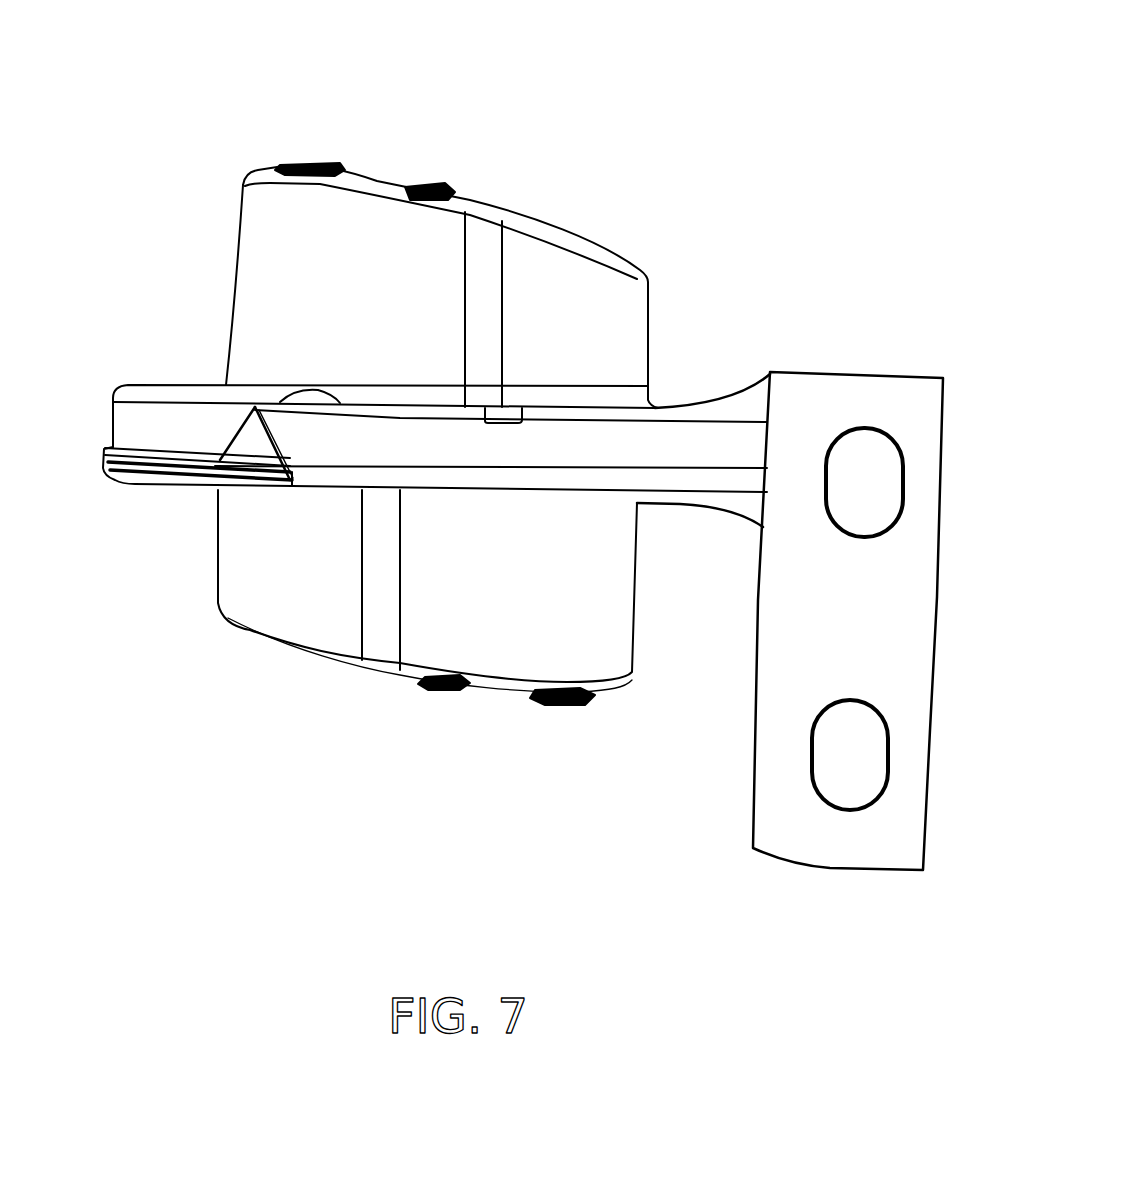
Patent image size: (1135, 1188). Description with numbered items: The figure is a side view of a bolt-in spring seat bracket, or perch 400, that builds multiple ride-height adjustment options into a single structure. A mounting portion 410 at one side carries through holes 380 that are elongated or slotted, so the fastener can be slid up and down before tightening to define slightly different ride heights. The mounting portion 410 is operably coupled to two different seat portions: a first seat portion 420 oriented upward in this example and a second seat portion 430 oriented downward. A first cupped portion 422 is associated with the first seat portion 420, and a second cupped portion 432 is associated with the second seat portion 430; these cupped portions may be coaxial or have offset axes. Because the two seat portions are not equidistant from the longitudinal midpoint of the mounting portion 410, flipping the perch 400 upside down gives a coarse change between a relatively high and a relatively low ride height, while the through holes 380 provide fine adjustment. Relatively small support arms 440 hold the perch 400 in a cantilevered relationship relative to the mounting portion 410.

The perch 400 is at (767, 180).
The mounting portion 410 is at (832, 660).
The through holes 380 is at (865, 472).
The first seat portion 420 is at (185, 388).
The first cupped portion 422 is at (243, 265).
The second seat portion 430 is at (158, 485).
The second cupped portion 432 is at (243, 563).
The support arms 440 is at (750, 393).